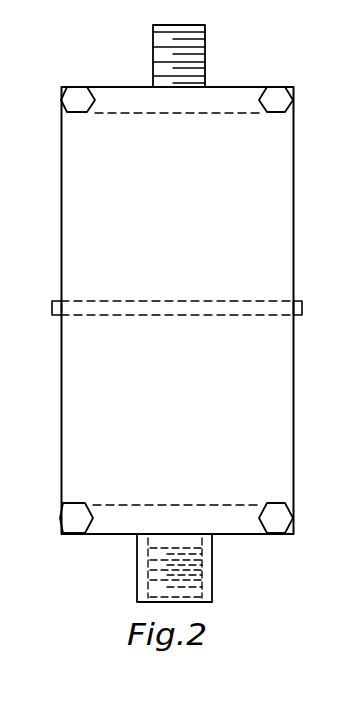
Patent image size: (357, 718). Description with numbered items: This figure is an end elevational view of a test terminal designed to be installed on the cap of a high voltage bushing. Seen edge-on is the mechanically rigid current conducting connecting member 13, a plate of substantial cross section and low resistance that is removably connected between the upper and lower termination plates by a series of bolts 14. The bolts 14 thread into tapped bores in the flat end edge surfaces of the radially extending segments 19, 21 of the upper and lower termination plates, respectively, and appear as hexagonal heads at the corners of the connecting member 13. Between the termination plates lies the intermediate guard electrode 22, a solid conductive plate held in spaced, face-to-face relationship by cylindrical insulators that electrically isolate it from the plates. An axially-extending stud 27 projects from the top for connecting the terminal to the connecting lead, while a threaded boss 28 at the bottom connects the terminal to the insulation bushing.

The connecting member 13 is at (167, 220).
The bolts 14 is at (80, 88).
The radially extending segment 19 is at (265, 77).
The radially extending segment 21 is at (133, 523).
The intermediate guard electrode 22 is at (93, 308).
The axially-extending stud 27 is at (206, 33).
The threaded boss 28 is at (208, 575).